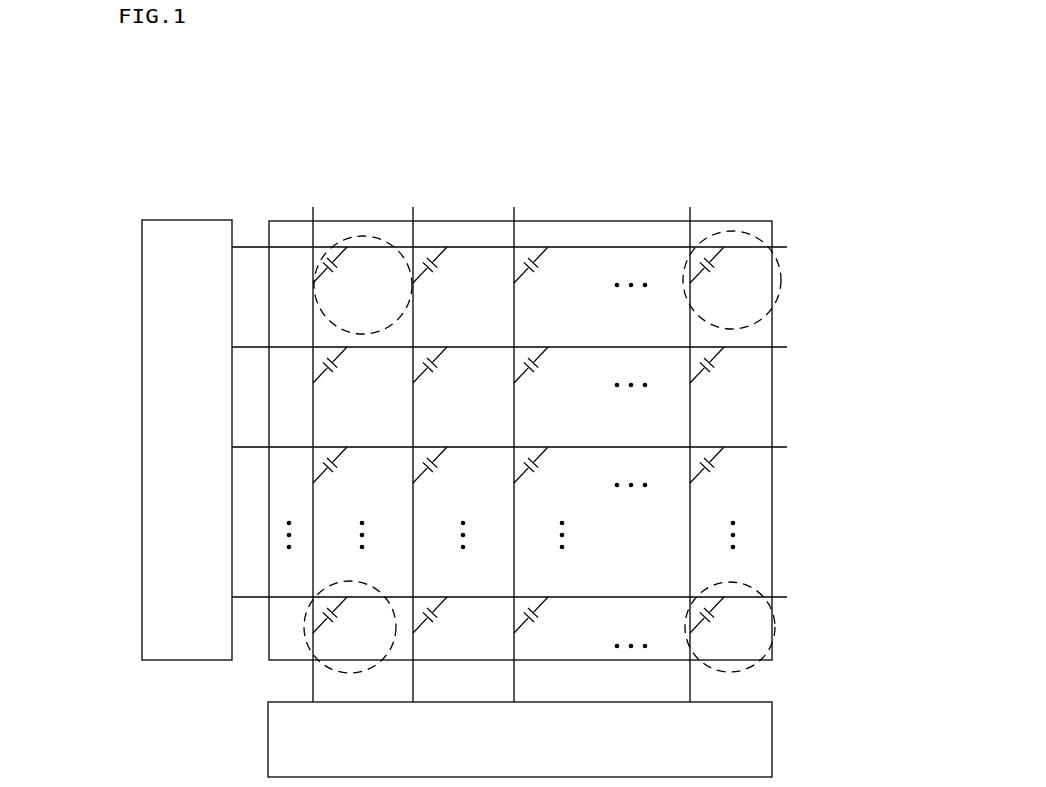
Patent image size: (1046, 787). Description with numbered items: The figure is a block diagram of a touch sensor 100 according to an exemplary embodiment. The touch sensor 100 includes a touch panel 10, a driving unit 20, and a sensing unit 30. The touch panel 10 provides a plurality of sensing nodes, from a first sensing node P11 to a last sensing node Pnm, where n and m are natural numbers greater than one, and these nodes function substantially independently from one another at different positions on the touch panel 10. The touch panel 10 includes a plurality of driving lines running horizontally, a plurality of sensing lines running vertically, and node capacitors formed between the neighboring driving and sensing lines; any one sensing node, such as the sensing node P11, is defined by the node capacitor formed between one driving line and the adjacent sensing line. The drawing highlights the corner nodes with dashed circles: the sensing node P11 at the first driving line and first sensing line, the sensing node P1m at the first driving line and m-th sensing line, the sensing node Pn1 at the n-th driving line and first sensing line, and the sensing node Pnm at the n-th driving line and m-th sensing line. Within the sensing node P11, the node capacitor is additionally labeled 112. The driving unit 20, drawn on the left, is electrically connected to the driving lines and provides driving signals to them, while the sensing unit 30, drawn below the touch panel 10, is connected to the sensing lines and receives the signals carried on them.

The touch sensor 100 is at (697, 125).
The touch panel 10 is at (735, 221).
The driving unit 20 is at (186, 220).
The sensing unit 30 is at (772, 737).
The sensing capacitor 112 is at (334, 272).
The sensing node P11 is at (350, 236).
The sensing node P1m is at (782, 293).
The sensing node Pn1 is at (306, 612).
The sensing node Pnm is at (776, 640).